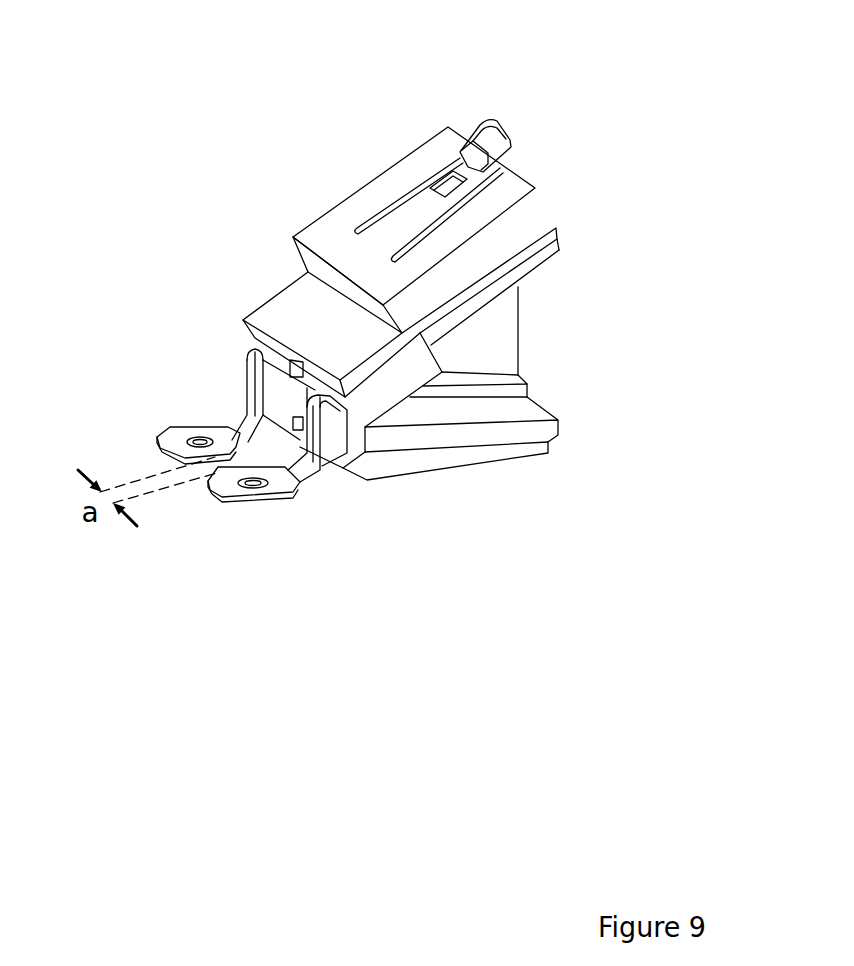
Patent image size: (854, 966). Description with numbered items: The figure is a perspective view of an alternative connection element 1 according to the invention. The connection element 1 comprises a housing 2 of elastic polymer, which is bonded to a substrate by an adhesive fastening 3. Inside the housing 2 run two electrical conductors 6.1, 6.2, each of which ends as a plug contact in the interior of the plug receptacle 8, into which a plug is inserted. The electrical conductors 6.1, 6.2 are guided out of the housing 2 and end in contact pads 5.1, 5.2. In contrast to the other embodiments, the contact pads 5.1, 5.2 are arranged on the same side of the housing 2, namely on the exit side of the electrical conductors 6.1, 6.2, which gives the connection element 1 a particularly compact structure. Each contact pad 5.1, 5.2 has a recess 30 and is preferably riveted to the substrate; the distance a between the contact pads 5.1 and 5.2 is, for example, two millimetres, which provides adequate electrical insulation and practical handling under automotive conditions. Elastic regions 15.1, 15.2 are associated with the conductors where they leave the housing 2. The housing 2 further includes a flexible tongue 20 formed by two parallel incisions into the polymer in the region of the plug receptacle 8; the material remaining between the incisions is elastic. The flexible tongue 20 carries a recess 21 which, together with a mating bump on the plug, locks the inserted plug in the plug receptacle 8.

The connection element 1 is at (293, 310).
The housing 2 is at (311, 293).
The adhesive fastening 3 is at (478, 458).
The contact pad 5.1 is at (240, 492).
The contact pad 5.2 is at (177, 448).
The electrical conductor 6.1 is at (303, 472).
The electrical conductor 6.2 is at (240, 427).
The plug receptacle 8 is at (558, 150).
The elastic region 15.1 is at (312, 427).
The elastic region 15.2 is at (251, 383).
The flexible tongue 20 is at (410, 213).
The recess in the flexible tongue 21 is at (445, 192).
The recess in the contact pad 30 is at (187, 441).